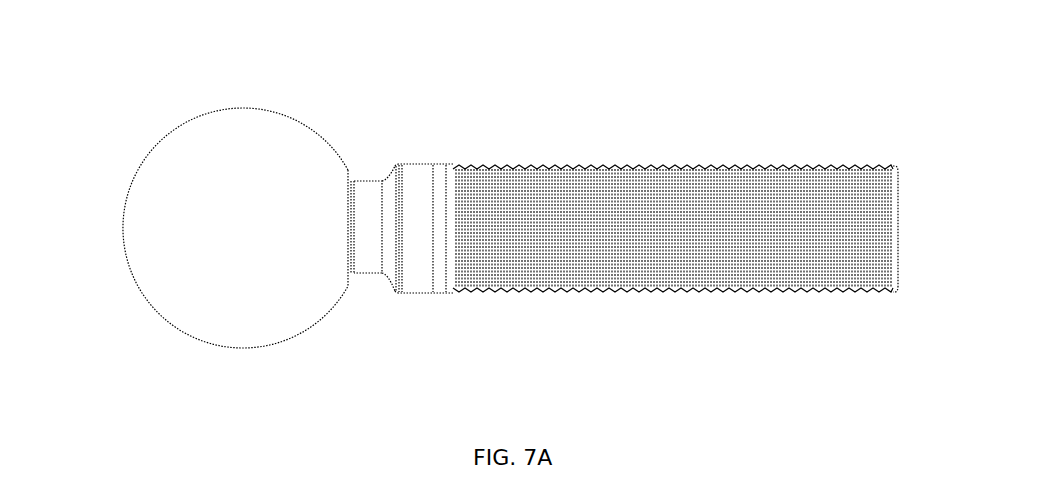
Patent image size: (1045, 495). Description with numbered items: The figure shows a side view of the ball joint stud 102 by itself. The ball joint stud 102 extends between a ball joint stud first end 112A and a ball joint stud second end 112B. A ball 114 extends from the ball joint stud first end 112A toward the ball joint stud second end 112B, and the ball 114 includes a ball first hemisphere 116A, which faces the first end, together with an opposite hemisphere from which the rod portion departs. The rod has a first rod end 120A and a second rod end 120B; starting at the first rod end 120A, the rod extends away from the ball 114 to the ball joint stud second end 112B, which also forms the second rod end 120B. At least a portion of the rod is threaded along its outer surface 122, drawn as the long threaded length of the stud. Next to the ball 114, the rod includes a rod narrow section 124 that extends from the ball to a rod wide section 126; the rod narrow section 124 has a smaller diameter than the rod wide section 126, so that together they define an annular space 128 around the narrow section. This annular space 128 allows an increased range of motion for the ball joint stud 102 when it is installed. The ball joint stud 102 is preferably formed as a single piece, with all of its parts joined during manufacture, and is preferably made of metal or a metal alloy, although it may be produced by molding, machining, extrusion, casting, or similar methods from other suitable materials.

The ball joint stud 102 is at (457, 98).
The ball joint stud first end 112A is at (122, 228).
The ball joint stud second end 112B is at (893, 223).
The ball 114 is at (238, 222).
The ball first hemisphere 116A is at (163, 260).
The first rod end 120A is at (347, 225).
The second rod end 120B is at (892, 267).
The outer surface 122 is at (635, 207).
The rod narrow section 124 is at (367, 228).
The rod wide section 126 is at (425, 277).
The annular space 128 is at (373, 282).